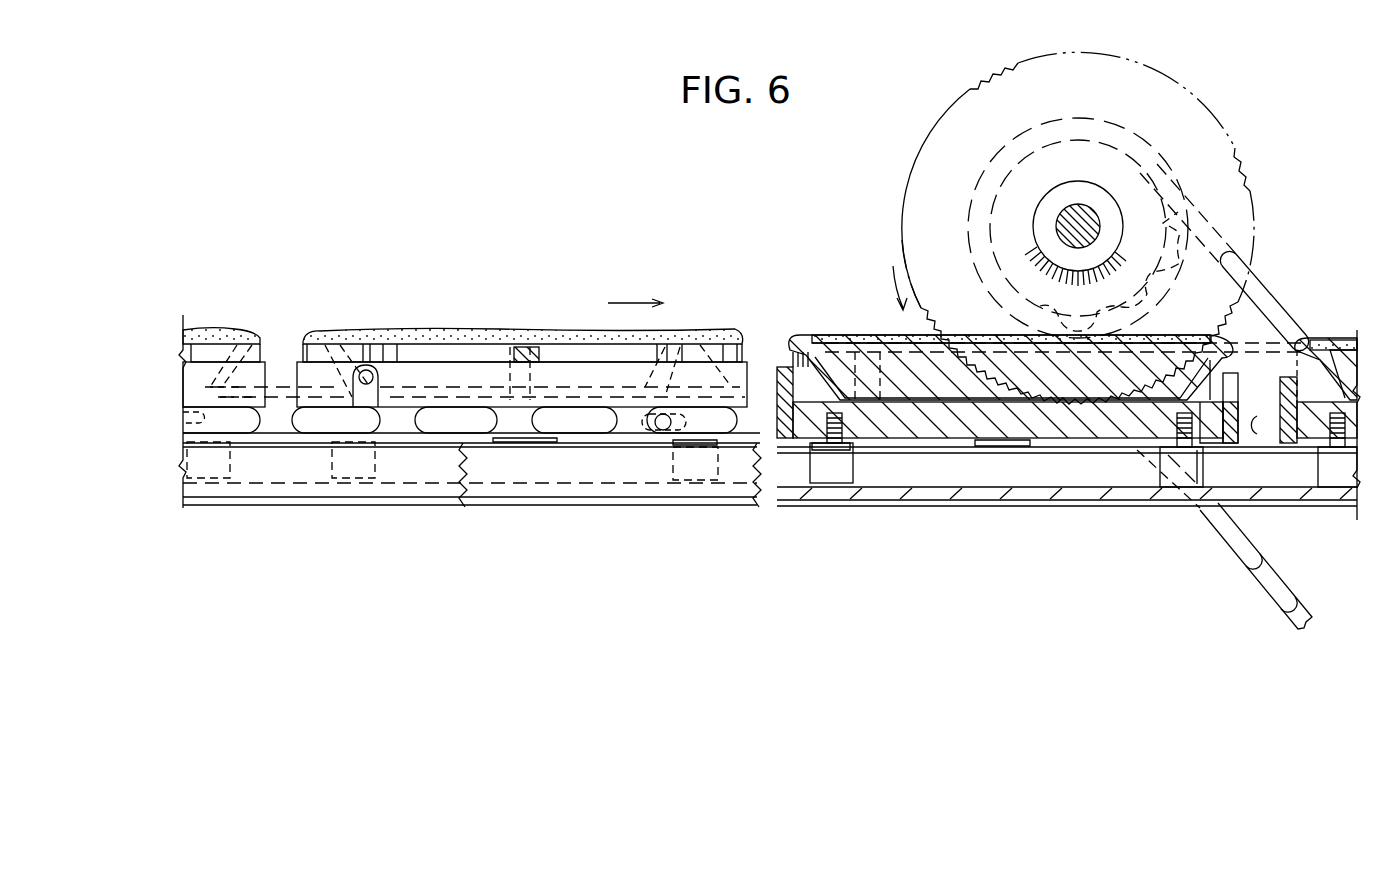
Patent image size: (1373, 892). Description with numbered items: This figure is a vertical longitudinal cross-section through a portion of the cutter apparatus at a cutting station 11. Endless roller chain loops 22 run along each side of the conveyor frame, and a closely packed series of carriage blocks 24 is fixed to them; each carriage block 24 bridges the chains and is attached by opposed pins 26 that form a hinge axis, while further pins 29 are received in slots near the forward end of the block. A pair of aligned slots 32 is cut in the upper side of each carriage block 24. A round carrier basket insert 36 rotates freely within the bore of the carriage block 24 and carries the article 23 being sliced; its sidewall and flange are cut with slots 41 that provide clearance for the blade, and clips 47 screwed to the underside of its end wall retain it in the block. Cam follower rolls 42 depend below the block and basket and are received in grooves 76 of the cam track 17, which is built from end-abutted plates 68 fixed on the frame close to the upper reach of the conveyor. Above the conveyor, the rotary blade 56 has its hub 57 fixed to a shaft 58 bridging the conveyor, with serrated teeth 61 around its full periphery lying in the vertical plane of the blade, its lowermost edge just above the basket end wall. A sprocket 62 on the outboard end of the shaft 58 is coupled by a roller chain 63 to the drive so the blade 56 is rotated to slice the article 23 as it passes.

The cutting station 11 is at (935, 60).
The rotary blade 56 is at (1200, 118).
The teeth 61 is at (1243, 167).
The sprocket 62 is at (1195, 250).
The roller chain 63 is at (1278, 314).
The hub 57 is at (1088, 190).
The shaft 58 is at (1065, 213).
The carrier basket insert 36 is at (300, 342).
The pins 26 is at (366, 370).
The article 23 is at (437, 335).
The slots 41 is at (527, 352).
The aligned slots 32 is at (1233, 392).
The carriage block 24 is at (324, 406).
The roller chain loops 22 is at (575, 425).
The pins 29 is at (663, 432).
The cam follower rolls 42 is at (700, 470).
The plates 68 is at (740, 466).
The cam track 17 is at (907, 507).
The grooves 76 is at (965, 487).
The clips 47 is at (1012, 442).